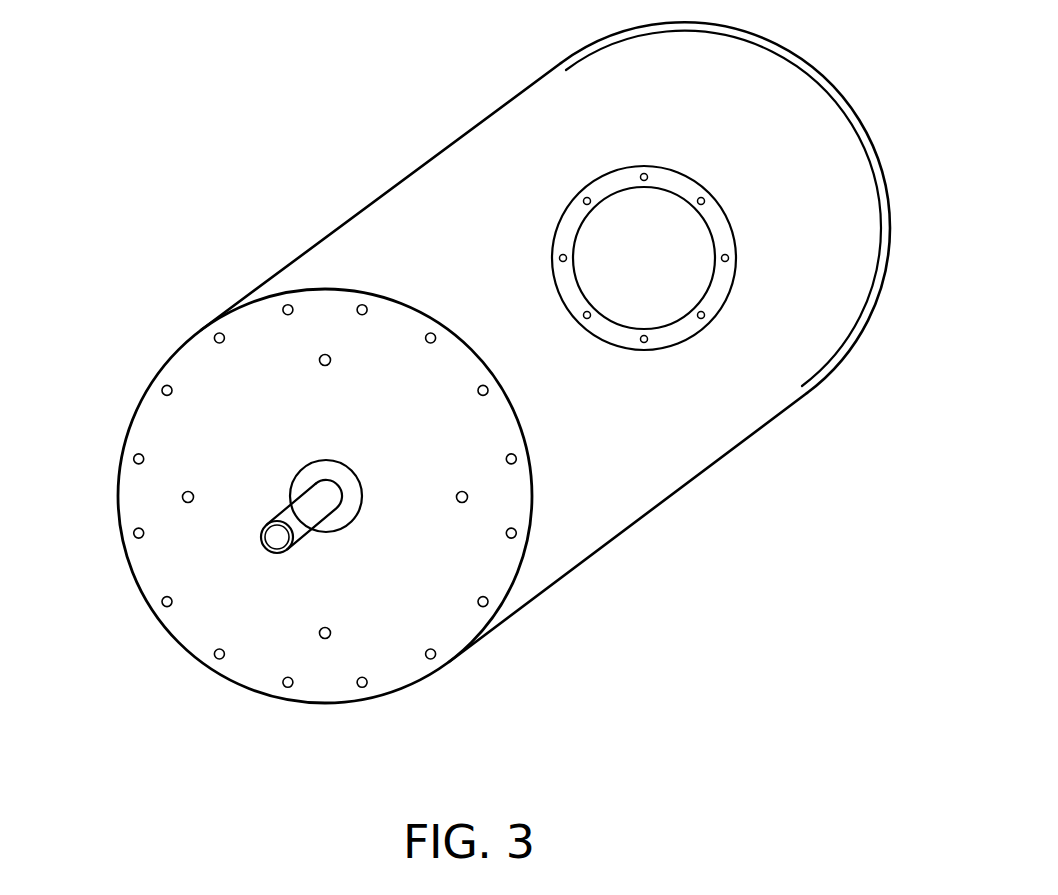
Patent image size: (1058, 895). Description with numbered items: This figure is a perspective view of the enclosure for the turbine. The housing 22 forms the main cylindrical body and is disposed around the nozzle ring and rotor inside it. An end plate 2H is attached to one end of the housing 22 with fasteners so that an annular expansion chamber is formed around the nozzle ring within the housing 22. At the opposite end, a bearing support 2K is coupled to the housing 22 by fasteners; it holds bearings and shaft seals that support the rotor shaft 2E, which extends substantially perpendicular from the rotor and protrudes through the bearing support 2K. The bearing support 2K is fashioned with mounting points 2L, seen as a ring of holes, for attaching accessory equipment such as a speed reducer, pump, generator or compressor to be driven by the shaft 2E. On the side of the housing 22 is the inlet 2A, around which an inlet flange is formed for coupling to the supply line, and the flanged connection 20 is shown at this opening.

The housing 22 is at (763, 402).
The end plate 2H is at (880, 182).
The bearing support 2K is at (424, 611).
The mounting points 2L is at (325, 354).
The rotor shaft 2E is at (302, 528).
The flange 20 is at (677, 333).
The inlet 2A is at (664, 272).